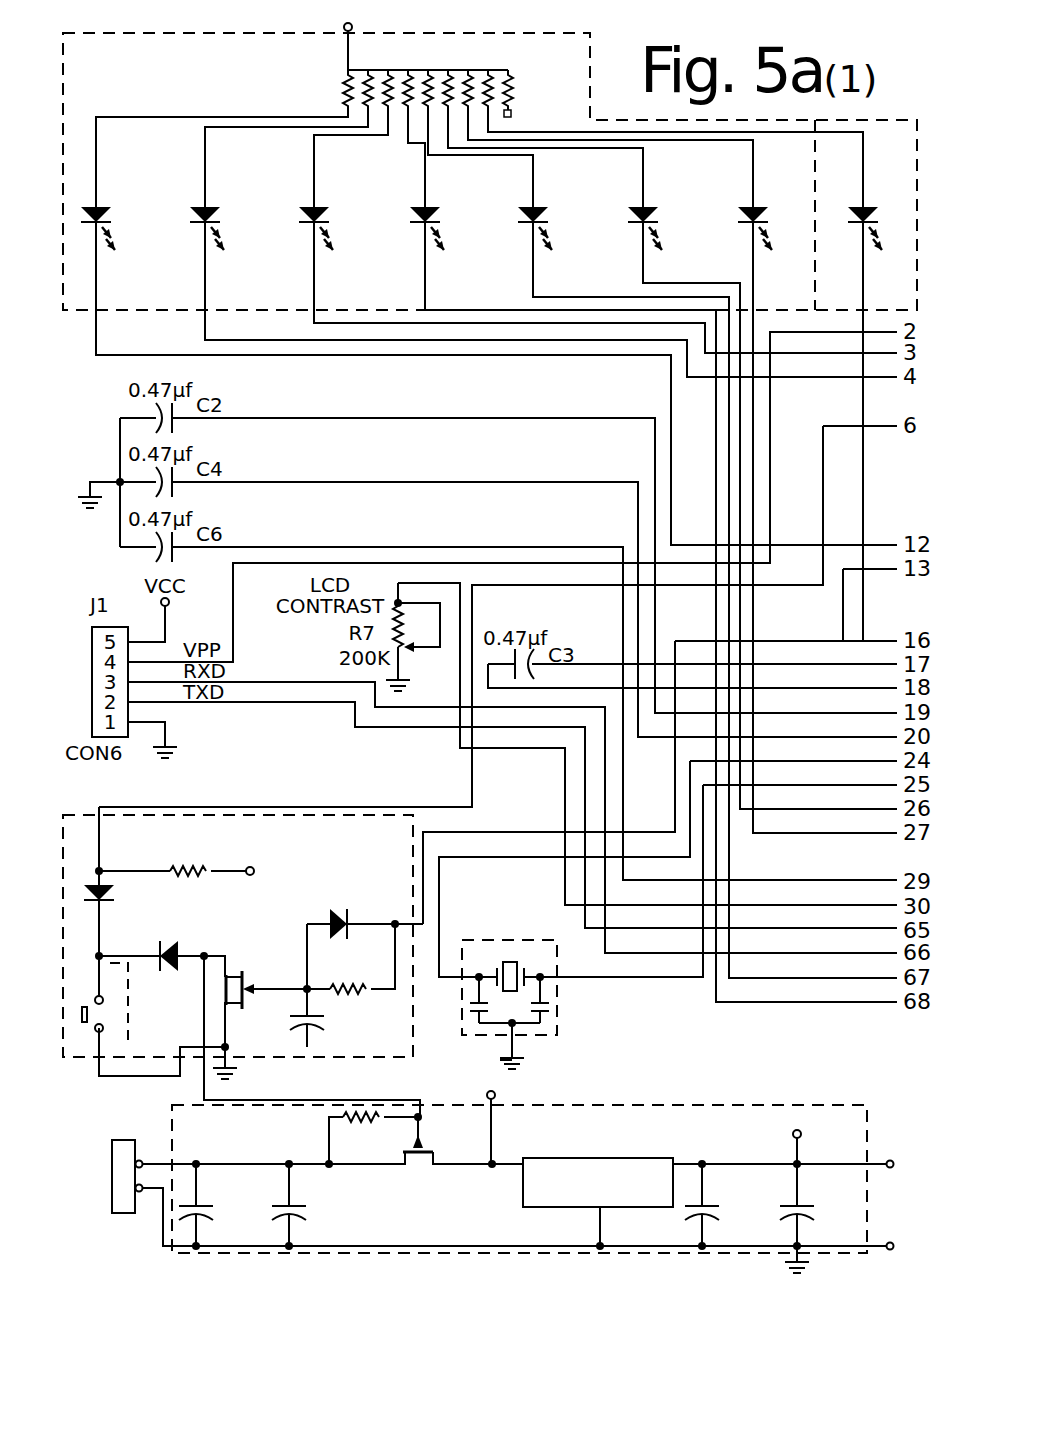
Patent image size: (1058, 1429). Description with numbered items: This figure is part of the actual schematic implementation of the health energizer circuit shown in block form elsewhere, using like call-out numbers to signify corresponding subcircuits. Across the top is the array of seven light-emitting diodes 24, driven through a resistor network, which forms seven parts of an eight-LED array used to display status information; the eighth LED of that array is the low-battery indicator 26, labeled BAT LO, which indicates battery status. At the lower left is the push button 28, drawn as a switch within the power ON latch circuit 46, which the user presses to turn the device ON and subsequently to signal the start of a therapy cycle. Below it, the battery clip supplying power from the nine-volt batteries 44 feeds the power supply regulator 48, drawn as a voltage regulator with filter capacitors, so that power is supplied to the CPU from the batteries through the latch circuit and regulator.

The light-emitting diodes 24 is at (149, 87).
The eighth light-emitting diode 26 is at (898, 302).
The push button 28 is at (83, 1027).
The nine-volt batteries 44 is at (125, 1140).
The power ON latch circuit 46 is at (74, 815).
The power supply regulator 48 is at (605, 1106).